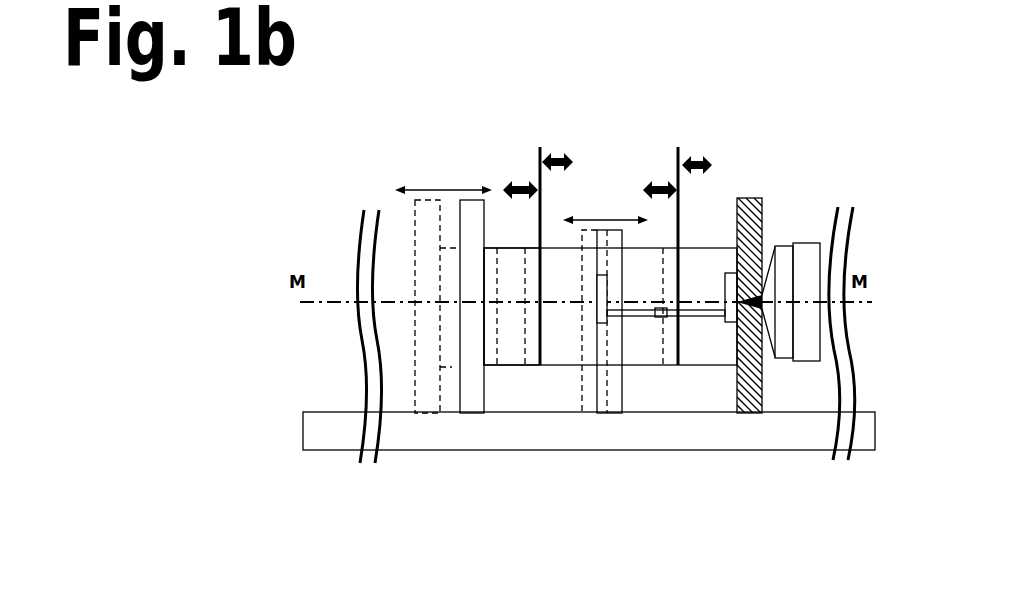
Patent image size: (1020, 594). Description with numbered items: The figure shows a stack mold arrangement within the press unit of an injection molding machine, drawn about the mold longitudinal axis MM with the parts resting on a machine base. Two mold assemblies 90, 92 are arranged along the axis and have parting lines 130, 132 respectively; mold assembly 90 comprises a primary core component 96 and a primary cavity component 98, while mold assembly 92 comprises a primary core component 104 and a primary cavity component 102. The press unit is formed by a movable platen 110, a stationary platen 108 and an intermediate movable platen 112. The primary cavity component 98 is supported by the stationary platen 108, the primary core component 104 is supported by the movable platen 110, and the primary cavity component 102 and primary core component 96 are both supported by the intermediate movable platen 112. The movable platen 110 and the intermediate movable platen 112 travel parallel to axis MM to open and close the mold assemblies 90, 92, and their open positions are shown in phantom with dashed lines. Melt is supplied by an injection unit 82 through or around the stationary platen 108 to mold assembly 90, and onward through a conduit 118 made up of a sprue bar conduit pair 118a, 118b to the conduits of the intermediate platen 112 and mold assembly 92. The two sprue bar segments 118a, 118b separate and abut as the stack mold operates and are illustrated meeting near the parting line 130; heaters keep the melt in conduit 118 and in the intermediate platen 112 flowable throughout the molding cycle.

The injection unit 82 is at (805, 332).
The mold assembly 90 is at (696, 195).
The mold assembly 92 is at (556, 190).
The primary core component 96 is at (643, 347).
The primary cavity component 98 is at (707, 347).
The primary cavity component 102 is at (578, 362).
The primary core component 104 is at (535, 355).
The stationary platen 108 is at (757, 205).
The movable platen 110 is at (476, 207).
The intermediate movable platen 112 is at (613, 243).
The conduit 118 is at (713, 429).
The conduit segment 118a is at (707, 316).
The conduit segment 118b is at (653, 317).
The parting line 130 is at (678, 147).
The parting line 132 is at (540, 147).